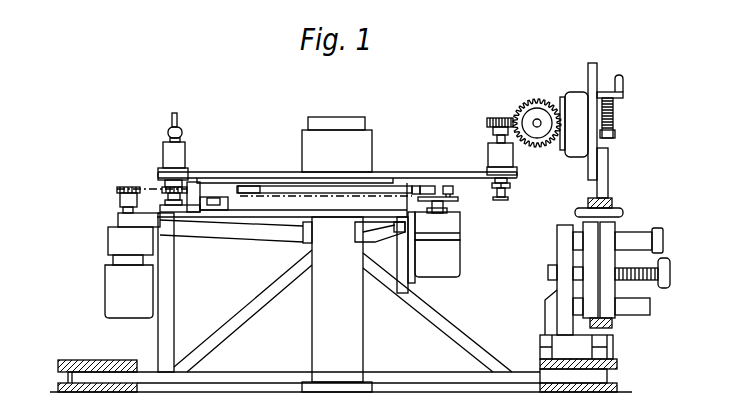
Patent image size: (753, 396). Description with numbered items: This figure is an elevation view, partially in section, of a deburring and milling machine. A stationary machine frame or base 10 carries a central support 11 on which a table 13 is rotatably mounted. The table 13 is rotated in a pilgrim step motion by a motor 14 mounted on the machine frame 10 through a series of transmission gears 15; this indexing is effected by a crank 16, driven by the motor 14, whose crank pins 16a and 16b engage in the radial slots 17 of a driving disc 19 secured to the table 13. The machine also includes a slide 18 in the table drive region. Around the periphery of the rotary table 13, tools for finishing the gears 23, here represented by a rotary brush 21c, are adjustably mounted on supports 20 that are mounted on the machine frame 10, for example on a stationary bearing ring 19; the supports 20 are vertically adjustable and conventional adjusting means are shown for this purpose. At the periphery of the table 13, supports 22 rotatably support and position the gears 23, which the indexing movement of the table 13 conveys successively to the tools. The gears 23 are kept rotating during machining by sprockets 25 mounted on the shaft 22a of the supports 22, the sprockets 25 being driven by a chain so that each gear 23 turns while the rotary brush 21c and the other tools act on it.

The machine frame 10 is at (401, 370).
The central support 11 is at (320, 317).
The table 13 is at (378, 176).
The motor 14 is at (456, 252).
The transmission gears 15 is at (457, 226).
The crank 16 is at (455, 199).
The crank pin 16a is at (450, 186).
The crank pin 16b is at (427, 186).
The radial slots 17 is at (254, 188).
The slide 18 is at (412, 190).
The driving disc 19 is at (100, 360).
The supports 20 is at (607, 187).
The rotary brushes 21c is at (534, 100).
The supports 22 is at (165, 160).
The shaft 22a is at (170, 200).
The gears 23 is at (500, 118).
The sprockets 25 is at (188, 192).